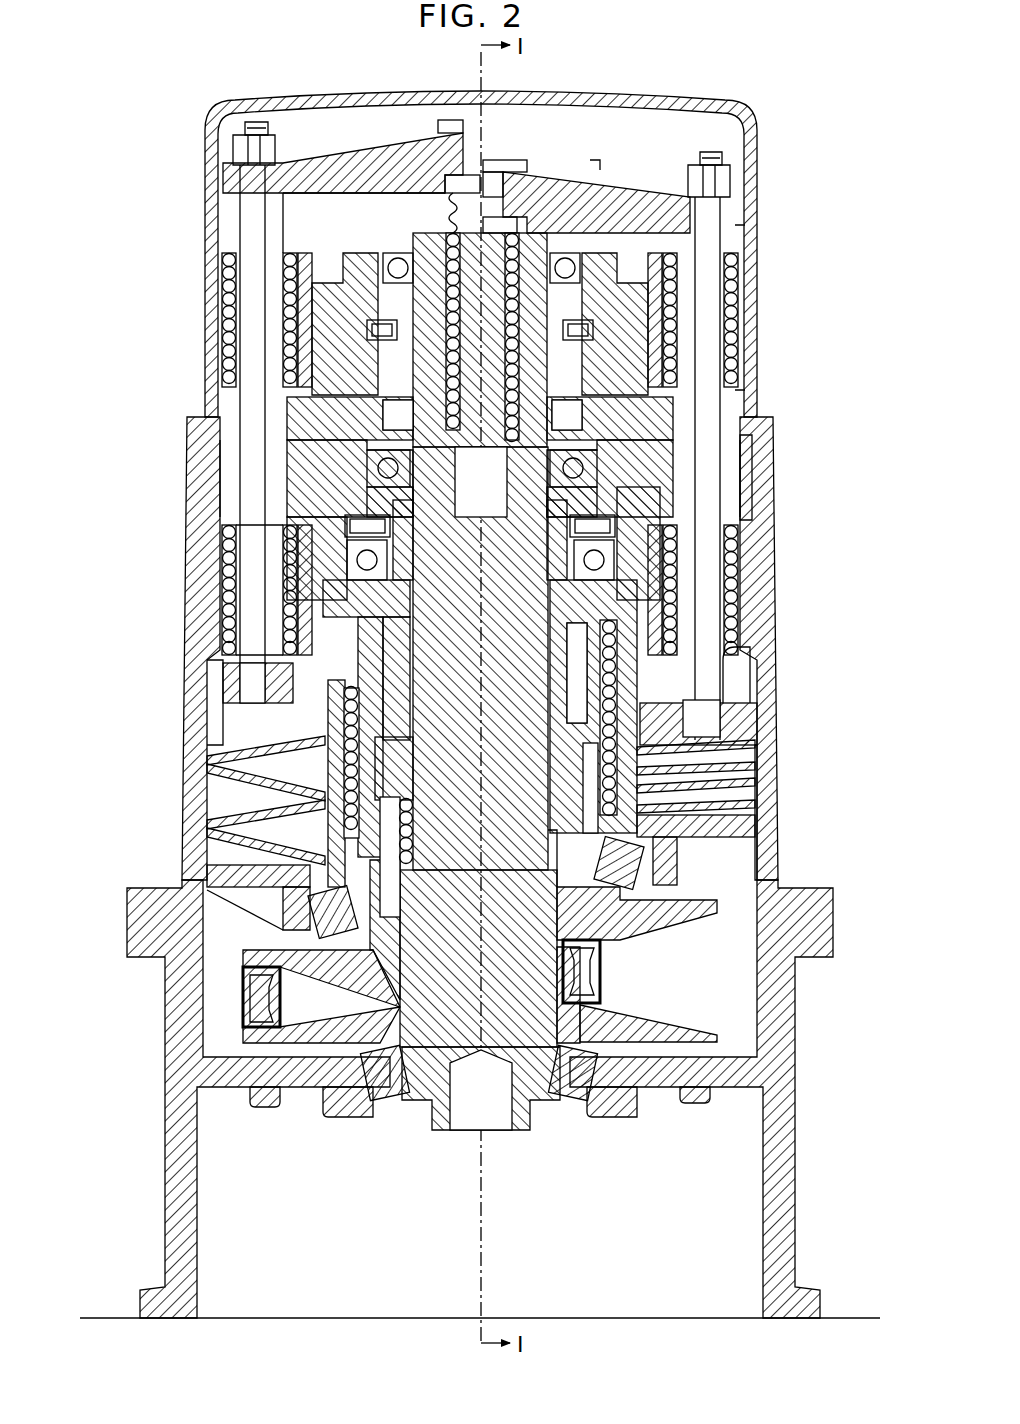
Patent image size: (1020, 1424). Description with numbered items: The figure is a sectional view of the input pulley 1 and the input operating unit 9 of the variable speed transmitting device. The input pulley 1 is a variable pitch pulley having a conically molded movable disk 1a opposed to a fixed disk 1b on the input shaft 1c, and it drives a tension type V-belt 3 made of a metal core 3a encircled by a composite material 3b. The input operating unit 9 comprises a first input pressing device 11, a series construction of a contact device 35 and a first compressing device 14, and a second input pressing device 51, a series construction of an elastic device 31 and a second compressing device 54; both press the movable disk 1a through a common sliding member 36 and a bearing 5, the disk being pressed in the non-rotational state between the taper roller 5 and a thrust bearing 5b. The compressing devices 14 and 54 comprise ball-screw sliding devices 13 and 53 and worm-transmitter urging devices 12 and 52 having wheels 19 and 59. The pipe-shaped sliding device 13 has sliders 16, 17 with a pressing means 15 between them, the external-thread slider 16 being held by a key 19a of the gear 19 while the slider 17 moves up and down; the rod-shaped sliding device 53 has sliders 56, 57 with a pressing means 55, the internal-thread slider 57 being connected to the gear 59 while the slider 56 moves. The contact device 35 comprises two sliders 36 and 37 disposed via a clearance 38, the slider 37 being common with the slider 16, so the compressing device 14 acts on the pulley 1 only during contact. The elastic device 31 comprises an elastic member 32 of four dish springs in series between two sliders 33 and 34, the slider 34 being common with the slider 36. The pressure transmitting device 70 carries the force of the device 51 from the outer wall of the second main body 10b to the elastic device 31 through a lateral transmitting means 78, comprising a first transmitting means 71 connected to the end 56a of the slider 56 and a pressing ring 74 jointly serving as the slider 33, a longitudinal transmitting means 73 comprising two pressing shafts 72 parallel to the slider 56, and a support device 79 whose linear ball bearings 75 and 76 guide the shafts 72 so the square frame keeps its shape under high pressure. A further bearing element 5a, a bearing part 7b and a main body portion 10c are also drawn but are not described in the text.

The input pulley 1 is at (547, 1130).
The movable disk 1a is at (678, 913).
The fixed disk 1b is at (672, 1030).
The input shaft 1c is at (438, 1100).
The V-belt 3 is at (583, 978).
The metal core 3a is at (272, 998).
The composite material 3b is at (260, 1032).
The bearing 5 is at (335, 905).
The ball bearing 5a is at (398, 256).
The thrust bearing 5b is at (592, 320).
The bearing plate 7b is at (232, 473).
The input operating unit 9 is at (192, 126).
The second main body 10b is at (760, 532).
The housing flange 10c is at (170, 1058).
The first input pressing device 11 is at (228, 718).
The urging device 12 is at (236, 530).
The sliding device 13 is at (300, 635).
The first compressing device 14 is at (290, 735).
The pressing means 15 is at (352, 686).
The external-thread slider 16 is at (348, 645).
The slider 17 is at (338, 722).
The wheel 19 is at (302, 572).
The key 19a is at (580, 660).
The elastic device 31 is at (765, 822).
The elastic member 32 is at (722, 792).
The slider 33 is at (228, 700).
The slider 34 is at (248, 870).
The contact device 35 is at (360, 865).
The slider 36 is at (557, 832).
The slider 37 is at (612, 750).
The clearance 38 is at (620, 800).
The second input pressing device 51 is at (318, 265).
The urging device 52 is at (296, 392).
The sliding device 53 is at (300, 368).
The second compressing device 54 is at (318, 213).
The pressing means 55 is at (522, 262).
The slider 56 is at (520, 200).
The end of slider 56a is at (448, 118).
The internal-thread slider 57 is at (598, 190).
The wheel 59 is at (312, 345).
The pressure transmitting device 70 is at (672, 152).
The first transmitting means 71 is at (350, 152).
The pressing shafts 72 is at (252, 240).
The longitudinal transmitting means 73 is at (234, 481).
The pressing ring 74 is at (737, 700).
The linear ball bearing 75 is at (735, 305).
The linear ball bearing 76 is at (232, 596).
The lateral transmitting means 78 is at (602, 158).
The support device 79 is at (196, 517).